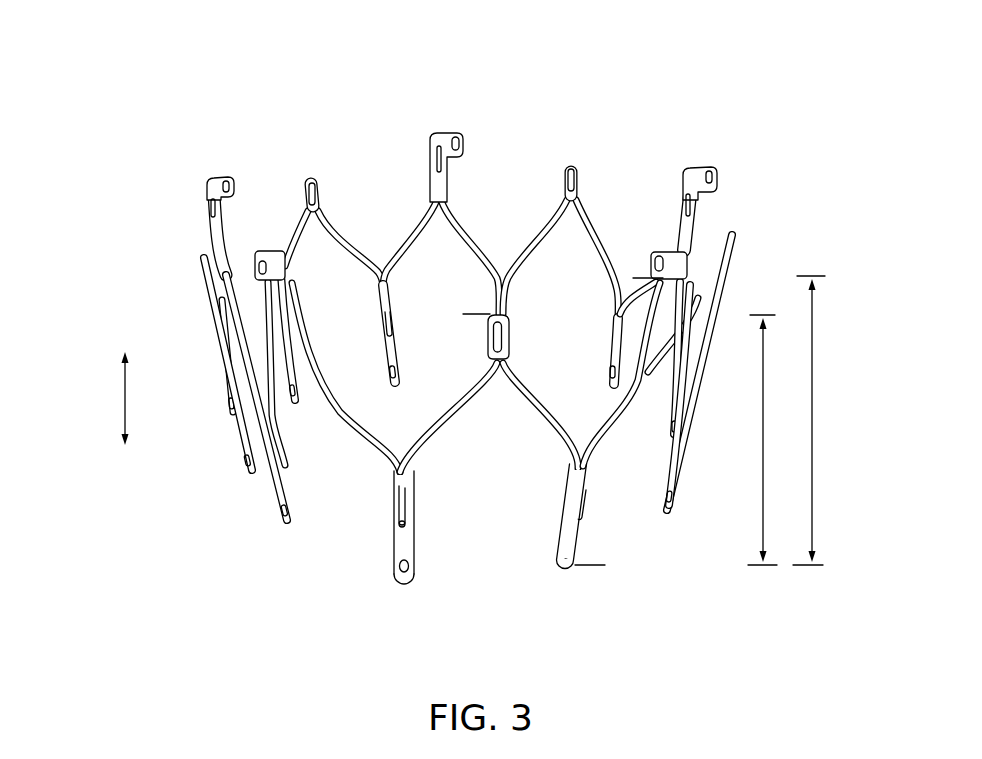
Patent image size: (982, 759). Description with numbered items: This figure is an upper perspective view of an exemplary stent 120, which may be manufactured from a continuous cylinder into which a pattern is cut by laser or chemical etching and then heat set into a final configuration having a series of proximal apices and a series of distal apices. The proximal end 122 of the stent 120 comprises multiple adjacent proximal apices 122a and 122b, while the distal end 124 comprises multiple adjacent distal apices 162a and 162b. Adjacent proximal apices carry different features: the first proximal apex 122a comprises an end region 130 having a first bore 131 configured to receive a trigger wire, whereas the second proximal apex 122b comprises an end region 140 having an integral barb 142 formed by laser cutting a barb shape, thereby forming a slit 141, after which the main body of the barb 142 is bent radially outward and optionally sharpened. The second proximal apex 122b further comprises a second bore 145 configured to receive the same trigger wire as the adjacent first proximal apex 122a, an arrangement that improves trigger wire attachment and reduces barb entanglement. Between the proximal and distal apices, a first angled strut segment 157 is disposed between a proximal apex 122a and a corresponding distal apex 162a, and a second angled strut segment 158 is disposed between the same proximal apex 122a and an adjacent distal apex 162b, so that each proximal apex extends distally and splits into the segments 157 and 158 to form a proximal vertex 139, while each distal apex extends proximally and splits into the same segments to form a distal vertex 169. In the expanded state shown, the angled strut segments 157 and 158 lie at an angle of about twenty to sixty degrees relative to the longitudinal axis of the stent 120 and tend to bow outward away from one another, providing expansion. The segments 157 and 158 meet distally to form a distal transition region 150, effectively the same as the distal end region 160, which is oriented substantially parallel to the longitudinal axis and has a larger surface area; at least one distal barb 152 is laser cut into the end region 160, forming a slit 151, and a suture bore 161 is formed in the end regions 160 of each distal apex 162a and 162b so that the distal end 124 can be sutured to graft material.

The stent 120 is at (286, 126).
The proximal end 122 is at (190, 250).
The first proximal apex 122a is at (492, 298).
The second proximal apex 122b is at (270, 246).
The distal end 124 is at (168, 521).
The end region 130 is at (488, 338).
The first bore 131 is at (503, 337).
The proximal vertex 139 is at (502, 367).
The end region 140 is at (288, 258).
The slit 141 is at (290, 303).
The barb 142 is at (283, 283).
The second bore 145 is at (257, 271).
The distal transition region 150 is at (409, 535).
The slit 151 is at (413, 524).
The distal barb 152 is at (396, 506).
The first angled strut segment 157 is at (447, 427).
The second angled strut segment 158 is at (543, 427).
The distal end region 160 is at (396, 547).
The suture bore 161 is at (399, 568).
The distal apex 162a is at (405, 592).
The distal apex 162b is at (566, 592).
The distal vertex 169 is at (383, 445).